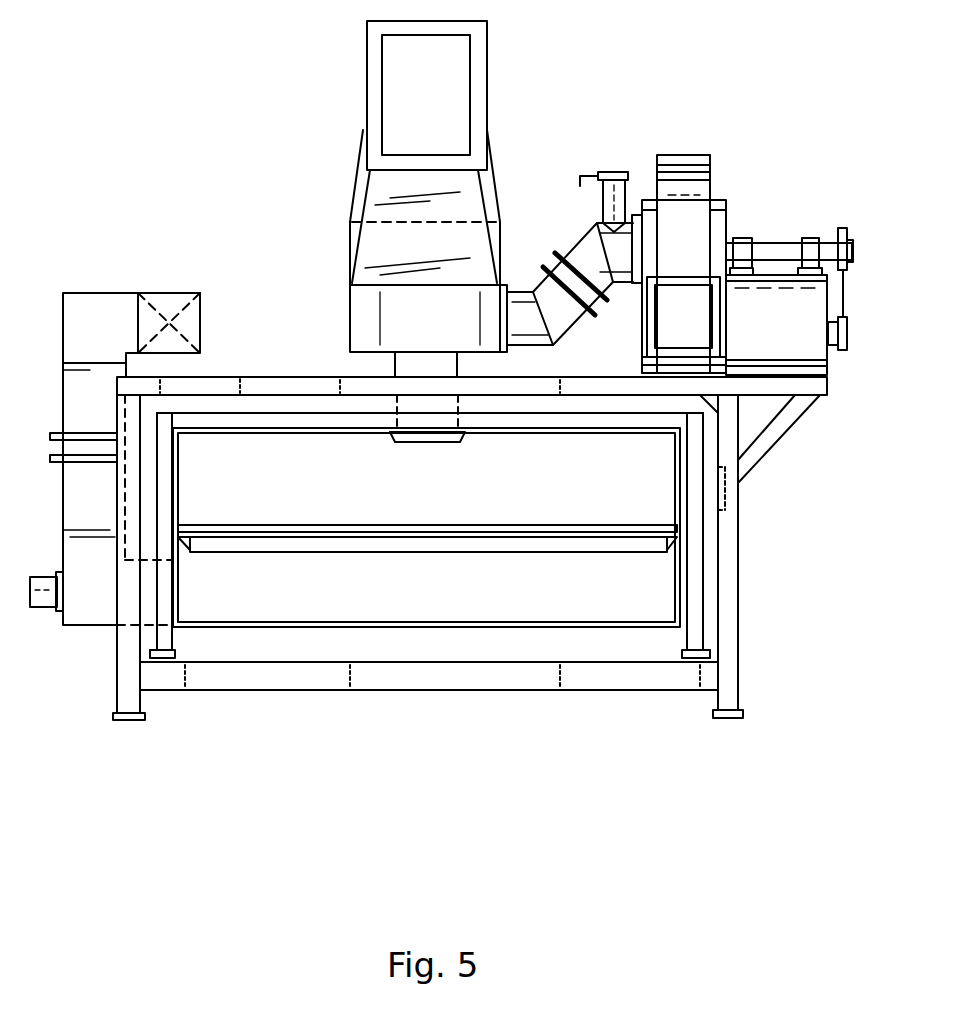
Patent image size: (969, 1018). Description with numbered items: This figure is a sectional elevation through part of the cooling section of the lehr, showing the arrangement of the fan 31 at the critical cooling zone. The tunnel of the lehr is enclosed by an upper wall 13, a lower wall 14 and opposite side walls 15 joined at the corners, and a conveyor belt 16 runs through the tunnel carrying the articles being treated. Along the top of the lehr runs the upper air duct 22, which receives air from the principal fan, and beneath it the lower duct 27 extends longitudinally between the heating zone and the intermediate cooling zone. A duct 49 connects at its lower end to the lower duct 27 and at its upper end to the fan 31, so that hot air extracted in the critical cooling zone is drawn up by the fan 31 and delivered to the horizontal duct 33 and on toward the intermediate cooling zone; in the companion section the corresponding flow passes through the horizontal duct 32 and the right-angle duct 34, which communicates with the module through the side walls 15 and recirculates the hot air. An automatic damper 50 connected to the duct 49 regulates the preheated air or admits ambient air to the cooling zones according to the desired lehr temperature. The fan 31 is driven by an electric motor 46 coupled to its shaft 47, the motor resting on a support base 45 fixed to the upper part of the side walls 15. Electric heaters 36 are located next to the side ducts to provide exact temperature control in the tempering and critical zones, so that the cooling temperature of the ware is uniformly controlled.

The upper wall 13 is at (240, 407).
The lower wall 14 is at (462, 668).
The side walls 15 is at (148, 525).
The conveyor belt 16 is at (325, 528).
The upper air duct 22 is at (385, 192).
The lower duct 27 is at (368, 328).
The fan 31 is at (705, 175).
The horizontal duct 32 is at (176, 300).
The horizontal duct 33 is at (662, 330).
The duct 34 is at (72, 505).
The electric heaters 36 is at (46, 612).
The support base 45 is at (790, 435).
The electric motor 46 is at (818, 307).
The shaft 47 is at (787, 243).
The duct 49 is at (578, 242).
The automatic damper 50 is at (613, 170).